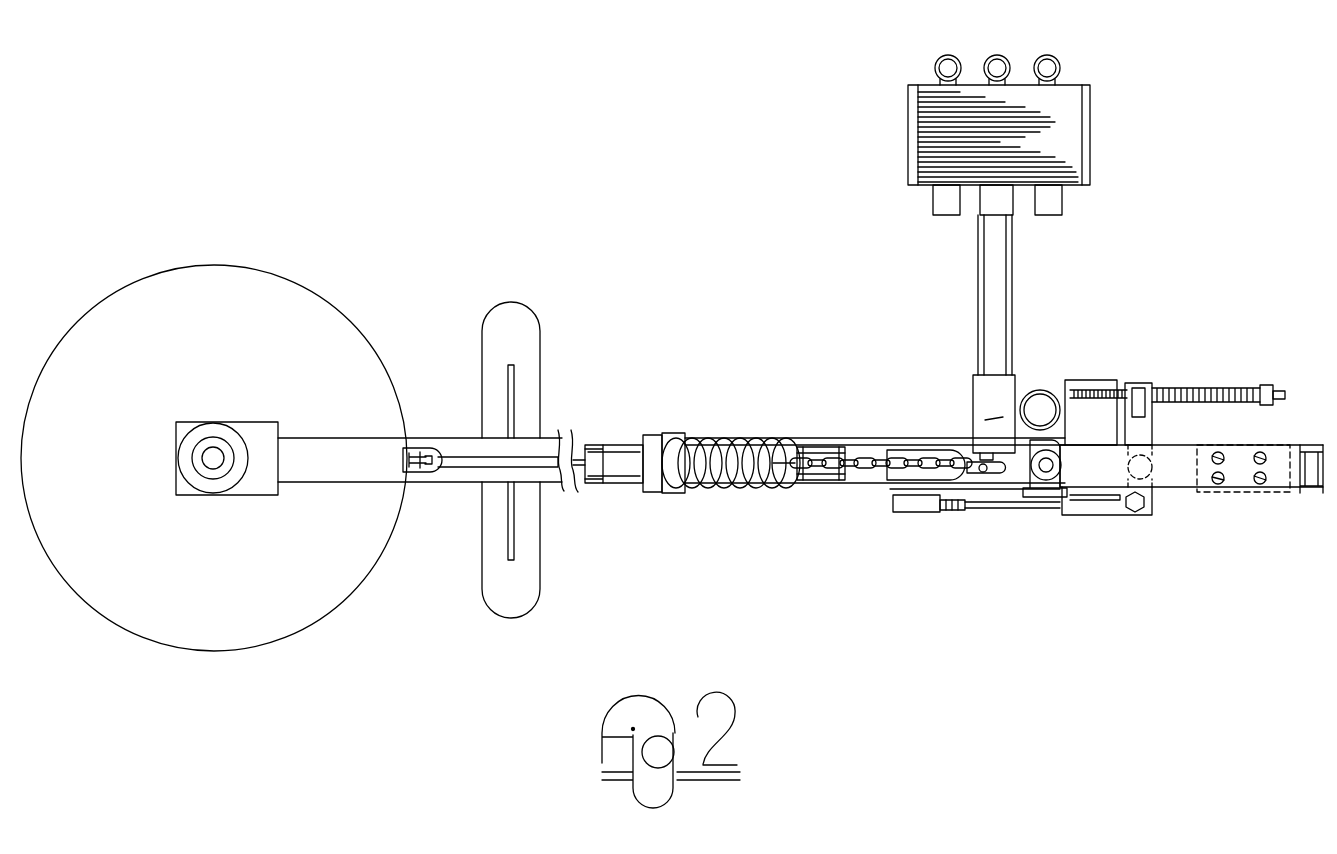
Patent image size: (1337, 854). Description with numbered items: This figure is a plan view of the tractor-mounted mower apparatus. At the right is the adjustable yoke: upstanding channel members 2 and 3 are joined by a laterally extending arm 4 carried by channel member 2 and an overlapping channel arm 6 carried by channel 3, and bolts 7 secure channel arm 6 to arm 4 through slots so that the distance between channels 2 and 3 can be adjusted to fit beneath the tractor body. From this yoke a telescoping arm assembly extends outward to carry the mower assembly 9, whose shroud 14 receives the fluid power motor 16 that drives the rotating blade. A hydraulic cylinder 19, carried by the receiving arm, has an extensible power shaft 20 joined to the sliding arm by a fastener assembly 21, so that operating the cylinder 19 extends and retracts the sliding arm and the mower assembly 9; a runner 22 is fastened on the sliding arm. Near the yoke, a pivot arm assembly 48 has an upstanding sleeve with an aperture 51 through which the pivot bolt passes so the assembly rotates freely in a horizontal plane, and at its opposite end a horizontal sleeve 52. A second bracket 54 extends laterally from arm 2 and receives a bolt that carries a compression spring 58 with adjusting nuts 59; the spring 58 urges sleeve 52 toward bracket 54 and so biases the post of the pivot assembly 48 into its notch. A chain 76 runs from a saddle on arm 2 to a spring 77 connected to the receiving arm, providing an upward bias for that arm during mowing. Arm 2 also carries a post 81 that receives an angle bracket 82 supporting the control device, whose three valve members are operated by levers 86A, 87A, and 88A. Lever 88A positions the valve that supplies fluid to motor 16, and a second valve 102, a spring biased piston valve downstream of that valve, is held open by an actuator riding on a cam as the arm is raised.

The channel member 2 is at (1065, 488).
The channel member 3 is at (1325, 445).
The laterally extending arm 4 is at (1182, 445).
The channel arm 6 is at (1250, 445).
The bolts 7 is at (1267, 458).
The mower assembly 9 is at (214, 428).
The shroud 14 is at (214, 458).
The fluid power motor 16 is at (222, 440).
The hydraulic cylinder 19 is at (623, 458).
The extensible power shaft 20 is at (537, 457).
The fastener assembly 21 is at (423, 453).
The runner 22 is at (530, 366).
The pivot arm assembly 48 is at (1142, 437).
The aperture 51 is at (1127, 512).
The horizontal sleeve 52 is at (1135, 383).
The second bracket 54 is at (1060, 380).
The compression spring 58 is at (1187, 390).
The adjusting nuts 59 is at (1288, 372).
The chain 76 is at (867, 447).
The spring 77 is at (750, 438).
The post 81 is at (1040, 390).
The angle bracket 82 is at (972, 430).
The lever 86A is at (952, 57).
The lever 87A is at (978, 33).
The lever 88A is at (1030, 33).
The second valve 102 is at (910, 502).